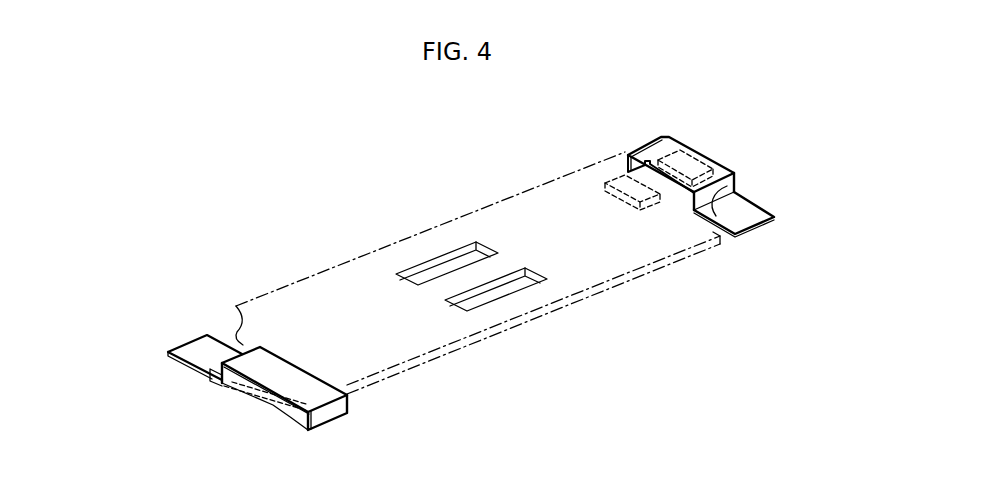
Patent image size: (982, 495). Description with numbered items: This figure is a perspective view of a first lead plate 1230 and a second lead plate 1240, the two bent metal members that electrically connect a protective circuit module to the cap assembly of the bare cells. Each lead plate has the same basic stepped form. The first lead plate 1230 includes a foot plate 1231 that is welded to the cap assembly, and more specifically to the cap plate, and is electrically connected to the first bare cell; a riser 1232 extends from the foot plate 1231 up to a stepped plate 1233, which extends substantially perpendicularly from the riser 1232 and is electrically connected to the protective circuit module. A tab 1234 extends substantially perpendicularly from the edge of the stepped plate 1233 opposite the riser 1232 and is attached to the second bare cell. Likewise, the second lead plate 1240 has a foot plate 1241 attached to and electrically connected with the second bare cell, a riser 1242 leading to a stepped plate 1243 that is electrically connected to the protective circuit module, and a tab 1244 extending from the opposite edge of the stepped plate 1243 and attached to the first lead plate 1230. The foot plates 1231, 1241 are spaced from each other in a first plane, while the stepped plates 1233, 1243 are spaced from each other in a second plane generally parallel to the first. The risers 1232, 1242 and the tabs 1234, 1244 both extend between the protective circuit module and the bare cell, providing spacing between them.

The first lead plate 1230 is at (782, 197).
The foot plate 1231 is at (747, 218).
The riser 1232 is at (712, 213).
The stepped plate 1233 is at (702, 155).
The tab 1234 is at (632, 167).
The second lead plate 1240 is at (147, 350).
The foot plate 1241 is at (187, 350).
The riser 1242 is at (228, 389).
The stepped plate 1243 is at (278, 384).
The tab 1244 is at (331, 415).